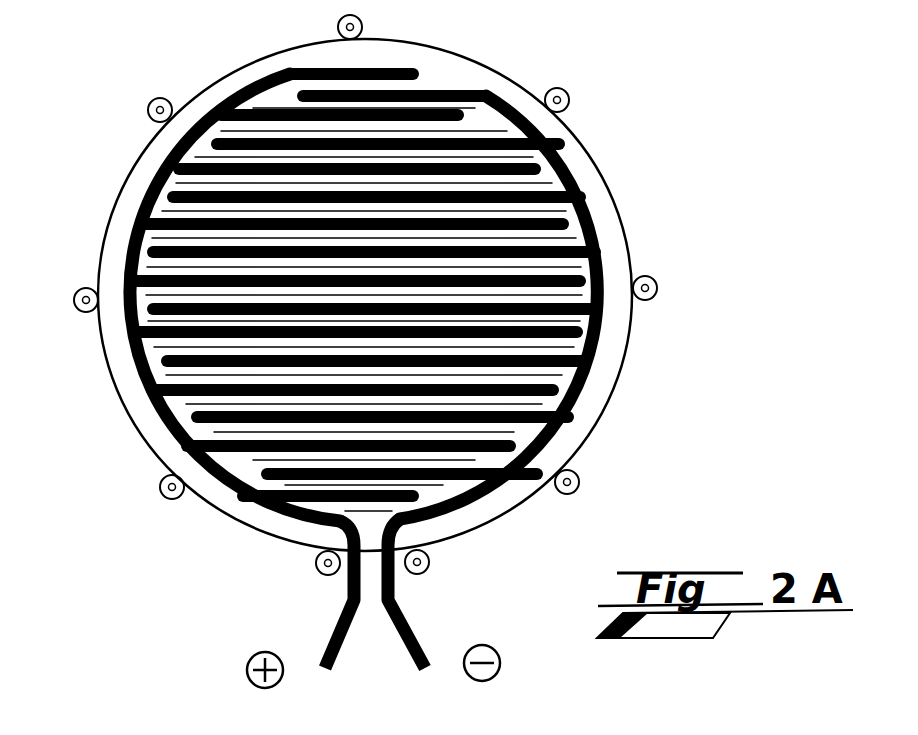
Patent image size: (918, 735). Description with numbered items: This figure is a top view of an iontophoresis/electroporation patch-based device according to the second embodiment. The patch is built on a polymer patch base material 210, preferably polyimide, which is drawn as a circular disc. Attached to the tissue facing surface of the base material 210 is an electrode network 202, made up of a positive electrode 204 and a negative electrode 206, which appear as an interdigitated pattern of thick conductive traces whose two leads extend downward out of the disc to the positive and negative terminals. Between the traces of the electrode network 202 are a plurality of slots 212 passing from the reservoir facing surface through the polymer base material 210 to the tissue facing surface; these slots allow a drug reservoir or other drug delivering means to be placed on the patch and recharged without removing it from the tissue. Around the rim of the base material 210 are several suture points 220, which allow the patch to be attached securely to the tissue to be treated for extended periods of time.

The electrode network 202 is at (402, 66).
The positive electrode 204 is at (338, 634).
The negative electrode 206 is at (413, 634).
The polymer patch base material 210 is at (613, 372).
The slots 212 is at (270, 111).
The suture points 220 is at (571, 100).